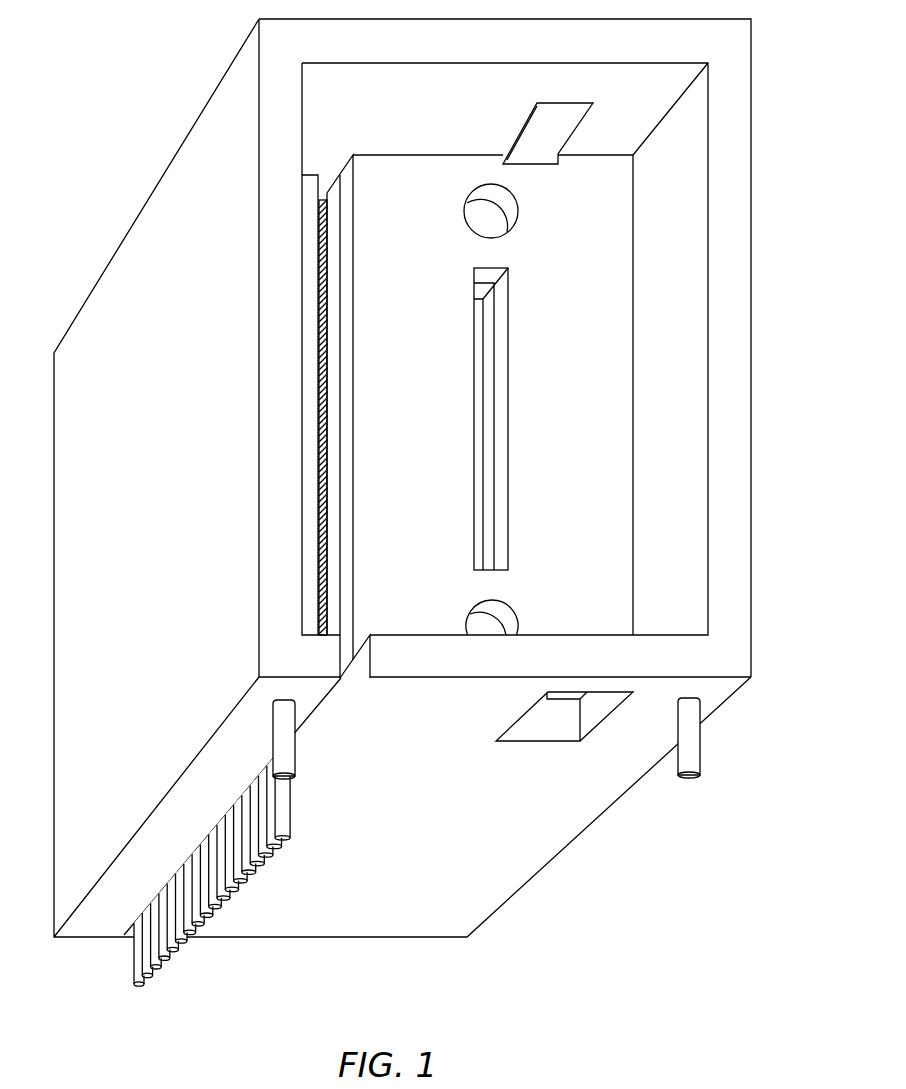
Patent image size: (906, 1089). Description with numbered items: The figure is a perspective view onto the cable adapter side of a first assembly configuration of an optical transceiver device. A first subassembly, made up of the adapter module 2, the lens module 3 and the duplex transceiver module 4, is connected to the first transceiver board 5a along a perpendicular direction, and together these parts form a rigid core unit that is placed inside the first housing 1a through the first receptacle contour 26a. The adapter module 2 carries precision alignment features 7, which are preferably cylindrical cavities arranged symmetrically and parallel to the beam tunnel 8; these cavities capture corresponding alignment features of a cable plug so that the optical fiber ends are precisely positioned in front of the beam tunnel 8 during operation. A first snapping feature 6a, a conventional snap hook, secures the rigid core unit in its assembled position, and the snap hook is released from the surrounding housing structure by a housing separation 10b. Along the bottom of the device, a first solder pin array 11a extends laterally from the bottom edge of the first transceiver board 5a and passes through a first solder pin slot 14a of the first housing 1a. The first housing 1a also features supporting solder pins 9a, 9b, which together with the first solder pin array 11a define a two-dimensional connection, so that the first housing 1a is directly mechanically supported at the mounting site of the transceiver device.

The first housing 1a is at (111, 291).
The adapter module 2 is at (383, 170).
The lens module 3 is at (335, 293).
The duplex transceiver module 4 is at (322, 265).
The first transceiver board 5a is at (307, 322).
The first snapping feature 6a is at (540, 158).
The precision alignment features 7 is at (468, 210).
The beam tunnel 8 is at (500, 440).
The supporting solder pin 9a is at (287, 767).
The supporting solder pin 9b is at (695, 765).
The housing separation 10b is at (546, 731).
The first solder pin array 11a is at (291, 849).
The first solder pin slot 14a is at (350, 685).
The first receptacle contour 26a is at (708, 462).